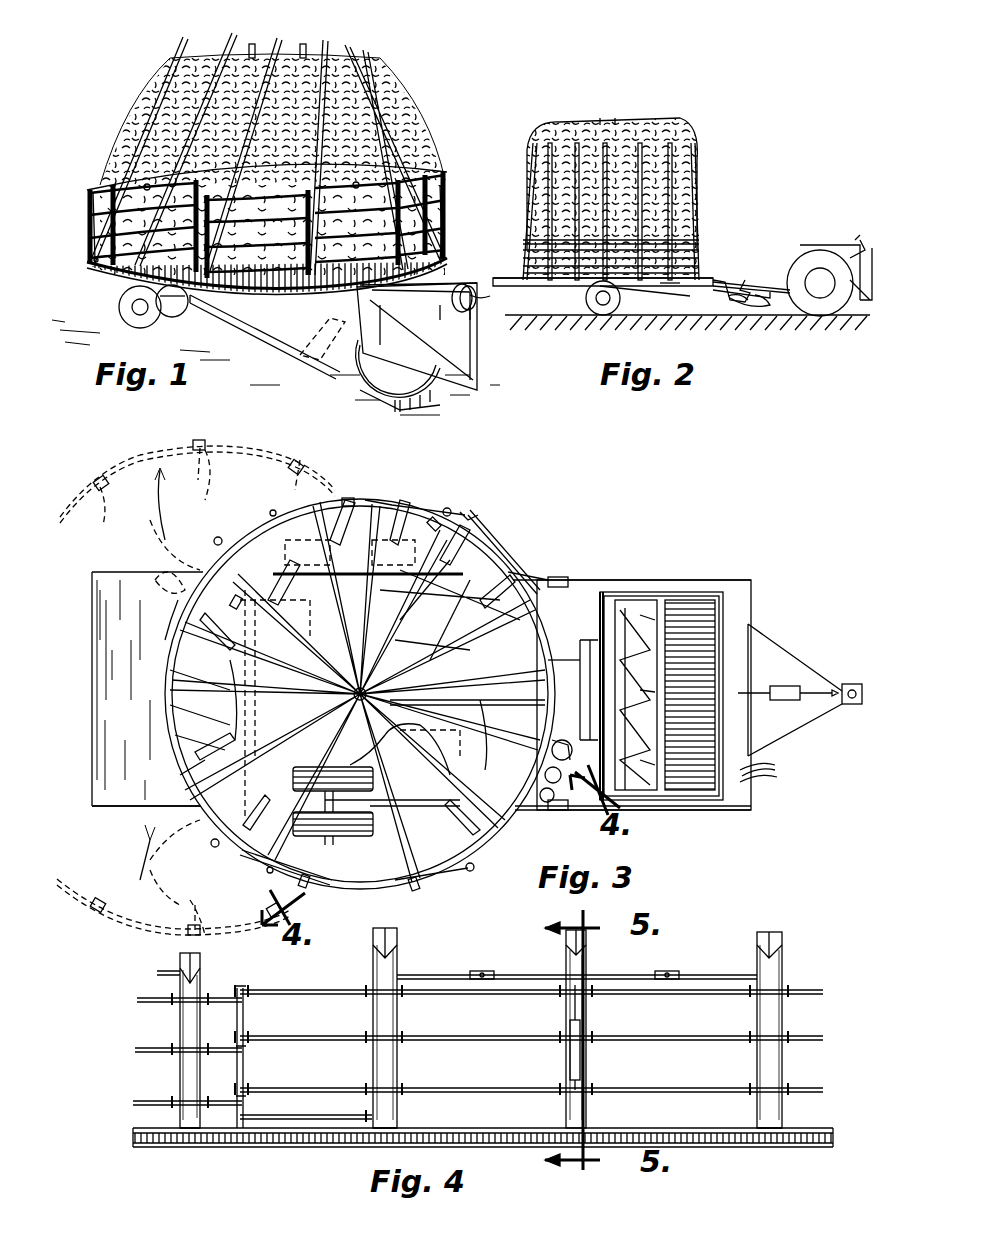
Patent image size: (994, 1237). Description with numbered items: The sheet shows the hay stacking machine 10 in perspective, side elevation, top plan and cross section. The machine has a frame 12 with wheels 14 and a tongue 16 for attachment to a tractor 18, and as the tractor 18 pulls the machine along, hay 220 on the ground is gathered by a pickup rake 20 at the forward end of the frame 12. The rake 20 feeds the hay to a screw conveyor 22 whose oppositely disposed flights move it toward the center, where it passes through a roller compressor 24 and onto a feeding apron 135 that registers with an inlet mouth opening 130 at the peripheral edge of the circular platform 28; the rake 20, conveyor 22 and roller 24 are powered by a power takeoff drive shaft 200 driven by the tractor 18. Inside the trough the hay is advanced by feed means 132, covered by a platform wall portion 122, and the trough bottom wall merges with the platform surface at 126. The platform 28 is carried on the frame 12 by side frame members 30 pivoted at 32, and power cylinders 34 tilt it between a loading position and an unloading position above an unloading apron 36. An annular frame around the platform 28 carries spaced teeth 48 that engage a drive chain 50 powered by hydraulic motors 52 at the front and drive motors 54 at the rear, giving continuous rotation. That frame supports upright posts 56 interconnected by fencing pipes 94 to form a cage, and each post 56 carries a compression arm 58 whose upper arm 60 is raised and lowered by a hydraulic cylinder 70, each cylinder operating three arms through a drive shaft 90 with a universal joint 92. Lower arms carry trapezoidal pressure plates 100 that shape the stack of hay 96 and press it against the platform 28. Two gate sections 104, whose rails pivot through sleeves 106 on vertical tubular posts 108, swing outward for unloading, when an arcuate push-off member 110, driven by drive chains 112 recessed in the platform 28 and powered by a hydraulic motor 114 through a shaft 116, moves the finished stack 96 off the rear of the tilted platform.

In FIG. 1, the hay stacking machine 10 is at (412, 45).
In FIG. 2, the hay stacking machine 10 is at (708, 135).
In FIG. 3, the hay stacking machine 10 is at (525, 525).
In FIG. 1, the frame 12 is at (478, 383).
In FIG. 2, the frame 12 is at (718, 305).
In FIG. 3, the frame 12 is at (640, 810).
In FIG. 1, the wheels 14 is at (125, 325).
In FIG. 2, the wheels 14 is at (590, 305).
In FIG. 3, the wheels 14 is at (280, 525).
In FIG. 2, the tongue 16 is at (780, 300).
In FIG. 3, the tongue 16 is at (815, 720).
In FIG. 2, the tractor 18 is at (820, 245).
In FIG. 1, the pickup rake 20 is at (450, 410).
In FIG. 2, the pickup rake 20 is at (750, 310).
In FIG. 3, the pickup rake 20 is at (700, 605).
In FIG. 1, the screw conveyor 22 is at (478, 300).
In FIG. 2, the screw conveyor 22 is at (490, 298).
In FIG. 3, the screw conveyor 22 is at (650, 605).
In FIG. 3, the roller compressor 24 is at (600, 680).
In FIG. 3, the circular table or platform 28 is at (305, 700).
In FIG. 4, the circular table or platform 28 is at (135, 1130).
In FIG. 1, the side frame members 30 is at (240, 338).
In FIG. 2, the side frame members 30 is at (660, 290).
In FIG. 3, the side frame members 30 is at (395, 810).
In FIG. 1, the pivot 32 is at (170, 320).
In FIG. 3, the pivot 32 is at (378, 820).
In FIG. 1, the power cylinders 34 is at (462, 258).
In FIG. 2, the power cylinders 34 is at (505, 258).
In FIG. 3, the power cylinders 34 is at (570, 575).
In FIG. 2, the unloading apron 36 is at (505, 275).
In FIG. 3, the unloading apron 36 is at (120, 810).
In FIG. 4, the teeth 48 is at (245, 1147).
In FIG. 1, the drive chain 50 is at (120, 290).
In FIG. 3, the drive chain 50 is at (165, 640).
In FIG. 4, the drive chain 50 is at (135, 1143).
In FIG. 1, the hydraulic motors 52 is at (370, 372).
In FIG. 3, the hydraulic motors 52 is at (565, 808).
In FIG. 3, the drive motors 54 is at (150, 580).
In FIG. 1, the upright posts 56 is at (445, 185).
In FIG. 2, the upright posts 56 is at (700, 250).
In FIG. 3, the upright posts 56 is at (198, 515).
In FIG. 4, the upright posts 56 is at (178, 1022).
In FIG. 1, the compression arms 58 is at (400, 110).
In FIG. 2, the compression arms 58 is at (700, 170).
In FIG. 3, the compression arms 58 is at (190, 780).
In FIG. 4, the compression arms 58 is at (365, 941).
In FIG. 2, the upper arm 60 is at (605, 150).
In FIG. 3, the upper arm 60 is at (355, 520).
In FIG. 4, the upper arm 60 is at (205, 960).
In FIG. 1, the hydraulic cylinder 70 is at (447, 200).
In FIG. 3, the hydraulic cylinder 70 is at (220, 530).
In FIG. 3, the drive shaft 90 is at (488, 530).
In FIG. 4, the drive shaft 90 is at (158, 972).
In FIG. 3, the universal joint 92 is at (472, 510).
In FIG. 4, the universal joint 92 is at (478, 968).
In FIG. 1, the fencing pipes 94 is at (120, 165).
In FIG. 3, the fencing pipes 94 is at (175, 740).
In FIG. 4, the fencing pipes 94 is at (135, 998).
In FIG. 1, the stack of hay 96 is at (266, 55).
In FIG. 2, the stack of hay 96 is at (665, 125).
In FIG. 1, the pressure plates 100 is at (290, 170).
In FIG. 2, the pressure plates 100 is at (665, 248).
In FIG. 3, the pressure plates 100 is at (230, 700).
In FIG. 3, the gate sections 104 is at (138, 455).
In FIG. 3, the sleeves 106 is at (170, 700).
In FIG. 4, the sleeves 106 is at (245, 1000).
In FIG. 4, the vertical tubular posts 108 is at (245, 1068).
In FIG. 3, the arcuate member 110 is at (515, 570).
In FIG. 3, the drive chains 112 is at (450, 515).
In FIG. 3, the hydraulic motor 114 is at (265, 620).
In FIG. 3, the shaft 116 is at (260, 672).
In FIG. 3, the platform wall portion 122 is at (450, 690).
In FIG. 3, the merging point 126 is at (440, 645).
In FIG. 1, the inlet mouth opening 130 is at (440, 245).
In FIG. 3, the inlet mouth opening 130 is at (560, 640).
In FIG. 3, the feed means 132 is at (410, 735).
In FIG. 3, the feeding apron 135 is at (572, 660).
In FIG. 2, the power takeoff drive shaft 200 is at (760, 286).
In FIG. 3, the power takeoff drive shaft 200 is at (800, 690).
In FIG. 2, the hay 220 is at (858, 320).